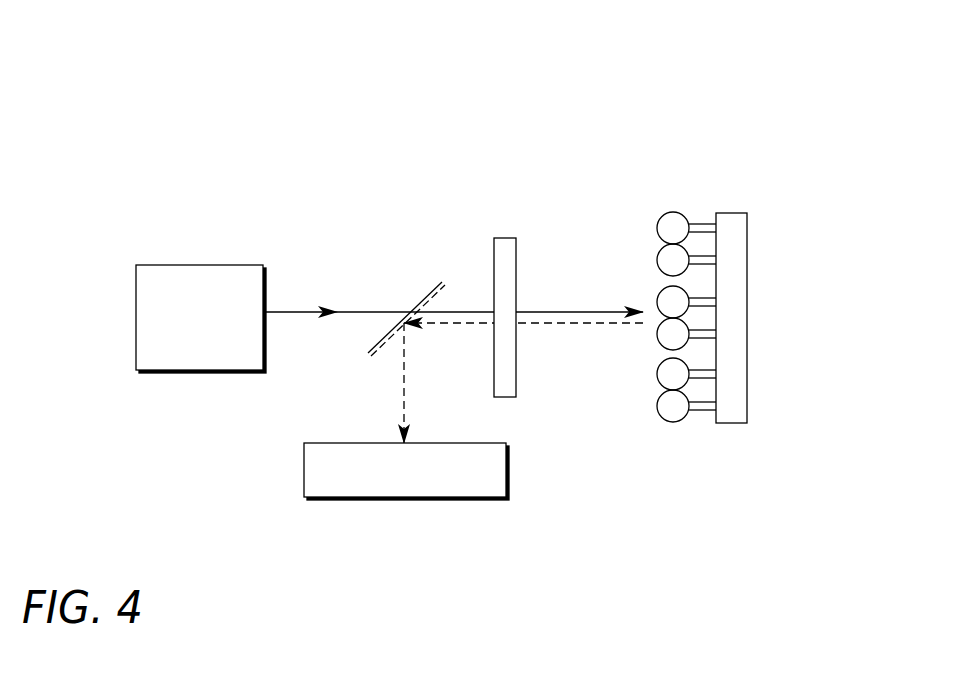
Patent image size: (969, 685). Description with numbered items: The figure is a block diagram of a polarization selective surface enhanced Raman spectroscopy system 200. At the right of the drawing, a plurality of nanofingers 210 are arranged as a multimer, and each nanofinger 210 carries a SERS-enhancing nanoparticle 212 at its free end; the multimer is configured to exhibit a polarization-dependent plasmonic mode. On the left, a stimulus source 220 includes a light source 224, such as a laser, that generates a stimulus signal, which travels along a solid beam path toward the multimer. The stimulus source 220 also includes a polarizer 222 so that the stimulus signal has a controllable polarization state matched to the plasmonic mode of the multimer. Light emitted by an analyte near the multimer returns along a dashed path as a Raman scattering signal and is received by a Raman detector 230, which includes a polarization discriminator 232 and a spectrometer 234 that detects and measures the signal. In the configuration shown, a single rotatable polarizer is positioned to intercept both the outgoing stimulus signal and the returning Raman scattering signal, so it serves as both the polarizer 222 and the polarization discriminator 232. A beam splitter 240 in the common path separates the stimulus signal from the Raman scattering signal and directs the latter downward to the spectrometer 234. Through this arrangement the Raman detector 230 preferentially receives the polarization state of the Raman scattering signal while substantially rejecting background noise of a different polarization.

The polarization selective SERS system 200 is at (686, 60).
The nanofinger 210 is at (700, 222).
The SERS-enhancing nanoparticle 212 is at (672, 212).
The stimulus source 220 is at (166, 167).
The polarizer 222 is at (505, 238).
The light source 224 is at (200, 265).
The Raman detector 230 is at (540, 521).
The polarization discriminator 232 is at (505, 317).
The spectrometer 234 is at (338, 443).
The beam splitter 240 is at (387, 272).